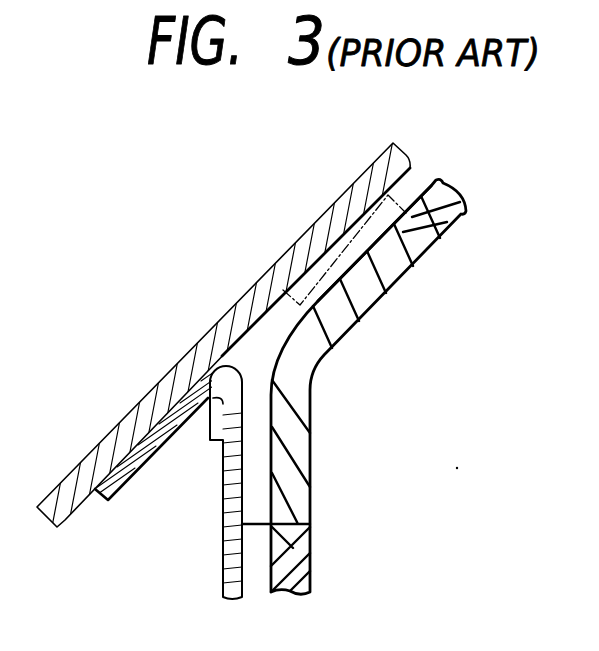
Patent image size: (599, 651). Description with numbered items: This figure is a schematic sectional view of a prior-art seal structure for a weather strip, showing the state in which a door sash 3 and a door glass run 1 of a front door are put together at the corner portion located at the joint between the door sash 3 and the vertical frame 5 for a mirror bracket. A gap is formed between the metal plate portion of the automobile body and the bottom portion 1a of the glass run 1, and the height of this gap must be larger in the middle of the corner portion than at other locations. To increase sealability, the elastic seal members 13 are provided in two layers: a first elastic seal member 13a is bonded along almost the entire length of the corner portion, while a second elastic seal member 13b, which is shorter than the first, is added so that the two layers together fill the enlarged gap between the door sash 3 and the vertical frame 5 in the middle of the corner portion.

The door glass run 1 is at (337, 325).
The bottom portion of the glass run 1a is at (347, 272).
The door sash 3 is at (160, 380).
The vertical frame 5 is at (232, 541).
The elastic seal members 13 is at (291, 204).
The first elastic seal member 13a is at (290, 285).
The second elastic seal member 13b is at (242, 345).